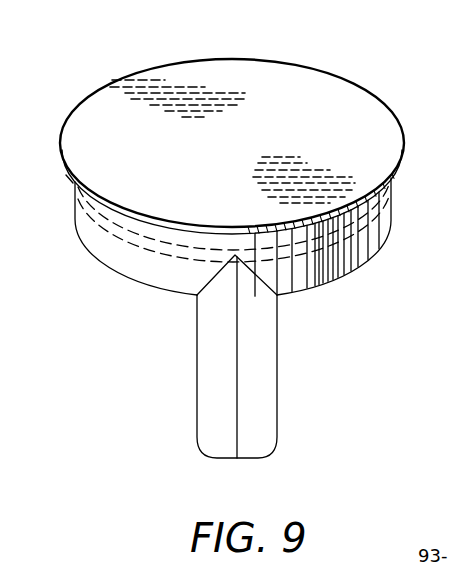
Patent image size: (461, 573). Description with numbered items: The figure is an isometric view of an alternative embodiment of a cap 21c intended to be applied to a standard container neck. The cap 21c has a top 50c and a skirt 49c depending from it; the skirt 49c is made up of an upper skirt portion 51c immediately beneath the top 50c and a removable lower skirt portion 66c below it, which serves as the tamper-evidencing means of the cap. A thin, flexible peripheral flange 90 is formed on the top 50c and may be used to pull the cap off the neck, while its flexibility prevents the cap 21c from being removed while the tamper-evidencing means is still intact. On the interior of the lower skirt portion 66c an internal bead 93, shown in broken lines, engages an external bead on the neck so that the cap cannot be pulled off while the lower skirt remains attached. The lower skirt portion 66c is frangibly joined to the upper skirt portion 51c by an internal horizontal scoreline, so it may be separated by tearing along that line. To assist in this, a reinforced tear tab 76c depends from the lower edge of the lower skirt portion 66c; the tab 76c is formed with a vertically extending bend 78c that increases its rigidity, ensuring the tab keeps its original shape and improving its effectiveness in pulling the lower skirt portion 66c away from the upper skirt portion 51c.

The cap 21c is at (119, 59).
The top 50c is at (342, 96).
The upper skirt portion 51c is at (390, 192).
The skirt 49c is at (90, 241).
The removable lower skirt portion 66c is at (318, 285).
The internal bead 93 is at (390, 237).
The peripheral flange 90 is at (73, 183).
The reinforced tear tab 76c is at (270, 400).
The vertically extending bend 78c is at (237, 385).